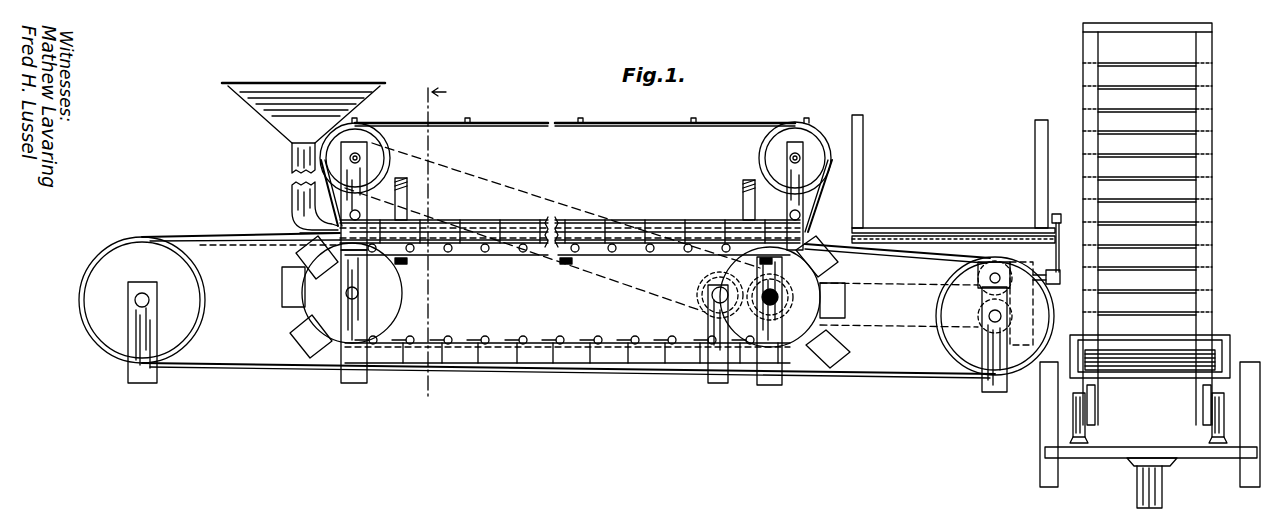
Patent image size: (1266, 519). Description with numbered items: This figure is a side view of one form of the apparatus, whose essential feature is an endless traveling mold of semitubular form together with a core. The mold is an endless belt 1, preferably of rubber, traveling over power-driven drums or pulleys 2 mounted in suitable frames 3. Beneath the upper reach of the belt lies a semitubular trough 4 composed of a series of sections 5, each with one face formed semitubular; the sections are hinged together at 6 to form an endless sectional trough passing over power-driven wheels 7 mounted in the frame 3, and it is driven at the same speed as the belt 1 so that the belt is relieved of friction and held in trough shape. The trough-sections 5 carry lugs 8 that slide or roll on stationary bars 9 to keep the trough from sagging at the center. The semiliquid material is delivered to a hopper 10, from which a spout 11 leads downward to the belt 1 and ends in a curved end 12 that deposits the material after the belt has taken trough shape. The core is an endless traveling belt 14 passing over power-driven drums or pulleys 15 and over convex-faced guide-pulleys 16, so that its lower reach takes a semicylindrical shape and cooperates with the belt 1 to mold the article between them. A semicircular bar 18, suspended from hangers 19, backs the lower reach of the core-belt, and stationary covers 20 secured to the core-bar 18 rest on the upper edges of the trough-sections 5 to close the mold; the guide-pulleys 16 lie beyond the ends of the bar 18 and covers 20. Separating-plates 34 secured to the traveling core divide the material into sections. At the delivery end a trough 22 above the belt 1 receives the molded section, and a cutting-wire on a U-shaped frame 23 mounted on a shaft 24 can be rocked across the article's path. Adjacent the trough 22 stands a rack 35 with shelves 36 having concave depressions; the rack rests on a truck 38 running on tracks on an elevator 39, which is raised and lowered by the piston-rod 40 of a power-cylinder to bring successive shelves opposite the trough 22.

The endless belt 1 is at (294, 237).
The drums or pulleys 2 is at (566, 306).
The frames 3 is at (142, 322).
The semitubular trough 4 is at (484, 246).
The trough-sections 5 is at (524, 246).
The hinges 6 is at (462, 246).
The power-driven wheels 7 is at (561, 295).
The lugs 8 is at (524, 252).
The stationary bars 9 is at (622, 256).
The hopper 10 is at (296, 108).
The spout 11 is at (296, 206).
The curved end 12 is at (304, 228).
The endless traveling belt 14 is at (664, 126).
The drums or pulleys 15 is at (372, 156).
The guide-pulleys 16 is at (362, 214).
The bar 18 is at (612, 228).
The hangers 19 is at (408, 208).
The covers 20 is at (658, 228).
The trough 22 is at (972, 230).
The U-shaped frame 23 is at (1068, 212).
The shaft 24 is at (1060, 282).
The separating-plates 34 is at (468, 116).
The rack 35 is at (1212, 212).
The shelves 36 is at (1156, 152).
The truck 38 is at (1172, 374).
The elevator 39 is at (1168, 448).
The piston-rod 40 is at (1160, 487).